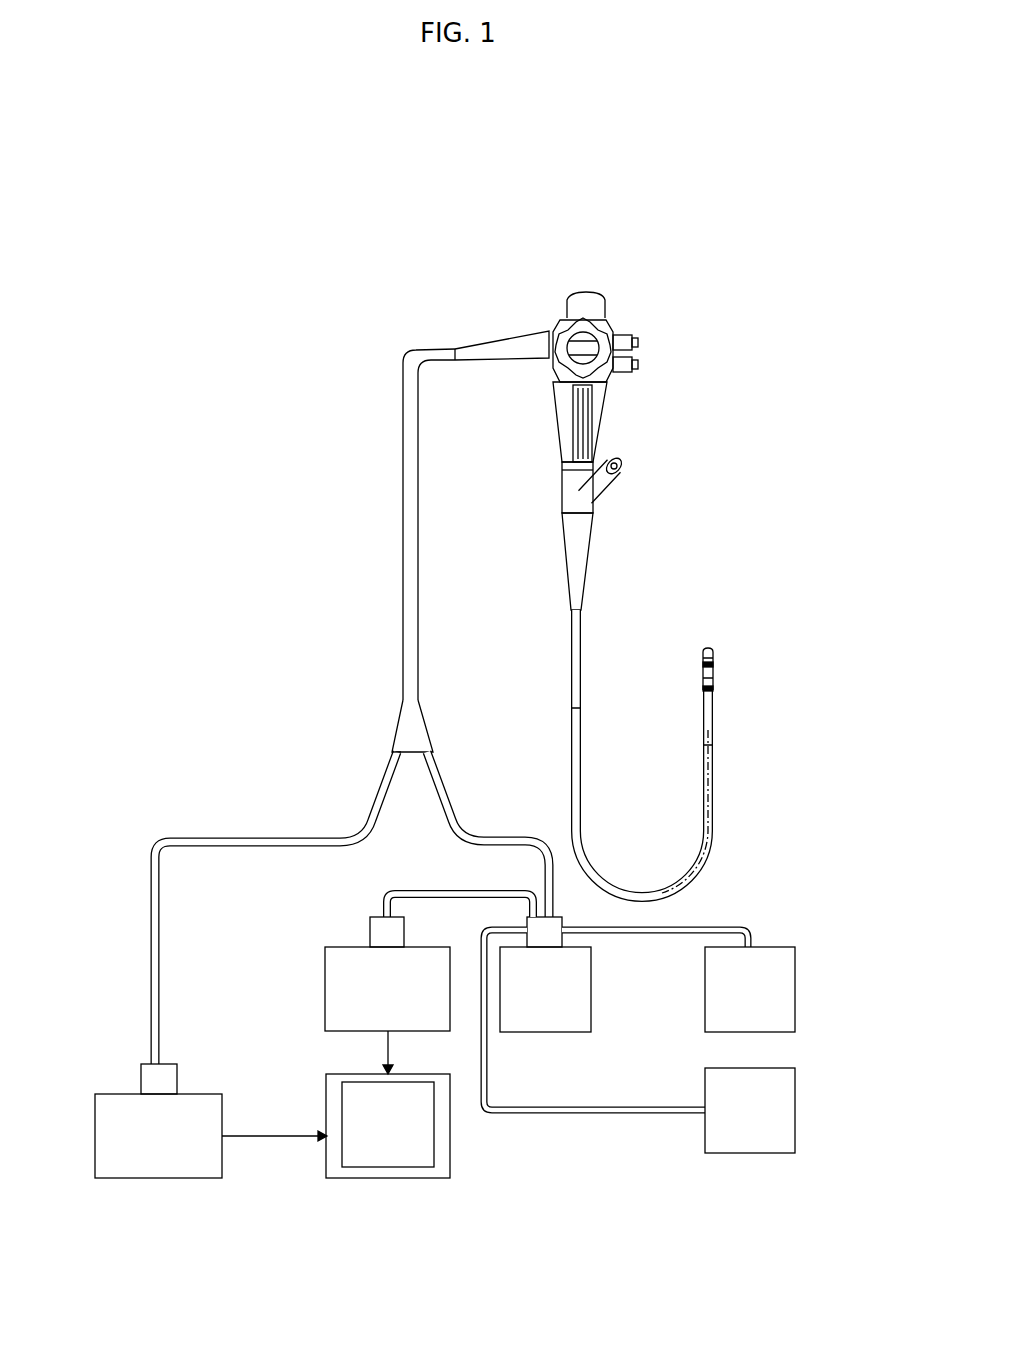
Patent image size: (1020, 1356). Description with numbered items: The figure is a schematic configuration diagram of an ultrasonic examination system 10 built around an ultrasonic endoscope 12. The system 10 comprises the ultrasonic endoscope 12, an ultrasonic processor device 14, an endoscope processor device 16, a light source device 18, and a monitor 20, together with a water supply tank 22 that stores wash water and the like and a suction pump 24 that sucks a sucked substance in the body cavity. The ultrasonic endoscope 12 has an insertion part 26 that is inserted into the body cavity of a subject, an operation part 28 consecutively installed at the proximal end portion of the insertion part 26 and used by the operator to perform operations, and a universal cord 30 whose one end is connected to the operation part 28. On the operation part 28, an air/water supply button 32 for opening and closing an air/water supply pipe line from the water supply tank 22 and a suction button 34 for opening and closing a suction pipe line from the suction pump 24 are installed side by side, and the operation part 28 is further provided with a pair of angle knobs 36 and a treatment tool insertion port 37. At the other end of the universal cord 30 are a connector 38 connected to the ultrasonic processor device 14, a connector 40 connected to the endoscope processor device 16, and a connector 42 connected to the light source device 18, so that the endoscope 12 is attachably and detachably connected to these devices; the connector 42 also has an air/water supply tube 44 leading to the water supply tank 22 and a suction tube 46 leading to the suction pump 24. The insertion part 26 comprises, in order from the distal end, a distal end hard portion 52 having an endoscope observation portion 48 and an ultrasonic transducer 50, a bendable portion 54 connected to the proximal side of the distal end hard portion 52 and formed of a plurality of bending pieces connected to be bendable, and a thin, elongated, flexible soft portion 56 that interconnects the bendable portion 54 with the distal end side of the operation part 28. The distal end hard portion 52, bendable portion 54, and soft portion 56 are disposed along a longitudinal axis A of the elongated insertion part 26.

The ultrasonic examination system 10 is at (353, 185).
The ultrasonic endoscope 12 is at (290, 545).
The ultrasonic processor device 14 is at (158, 1179).
The endoscope processor device 16 is at (325, 988).
The light source device 18 is at (591, 985).
The monitor 20 is at (450, 1130).
The water supply tank 22 is at (795, 985).
The suction pump 24 is at (795, 1108).
The insertion part 26 is at (623, 860).
The operation part 28 is at (720, 355).
The universal cord 30 is at (420, 352).
The air/water supply button 32 is at (638, 364).
The suction button 34 is at (638, 342).
The angle knob 36 is at (600, 326).
The treatment tool insertion port 37 is at (622, 462).
The connector 38 is at (177, 1078).
The connector 40 is at (369, 928).
The connector 42 is at (556, 920).
The air/water supply tube 44 is at (718, 927).
The suction tube 46 is at (604, 1114).
The endoscope observation portion 48 is at (712, 648).
The ultrasonic transducer 50 is at (714, 665).
The distal end hard portion 52 is at (699, 644).
The bendable portion 54 is at (713, 713).
The soft portion 56 is at (713, 800).
The longitudinal axis A is at (713, 757).